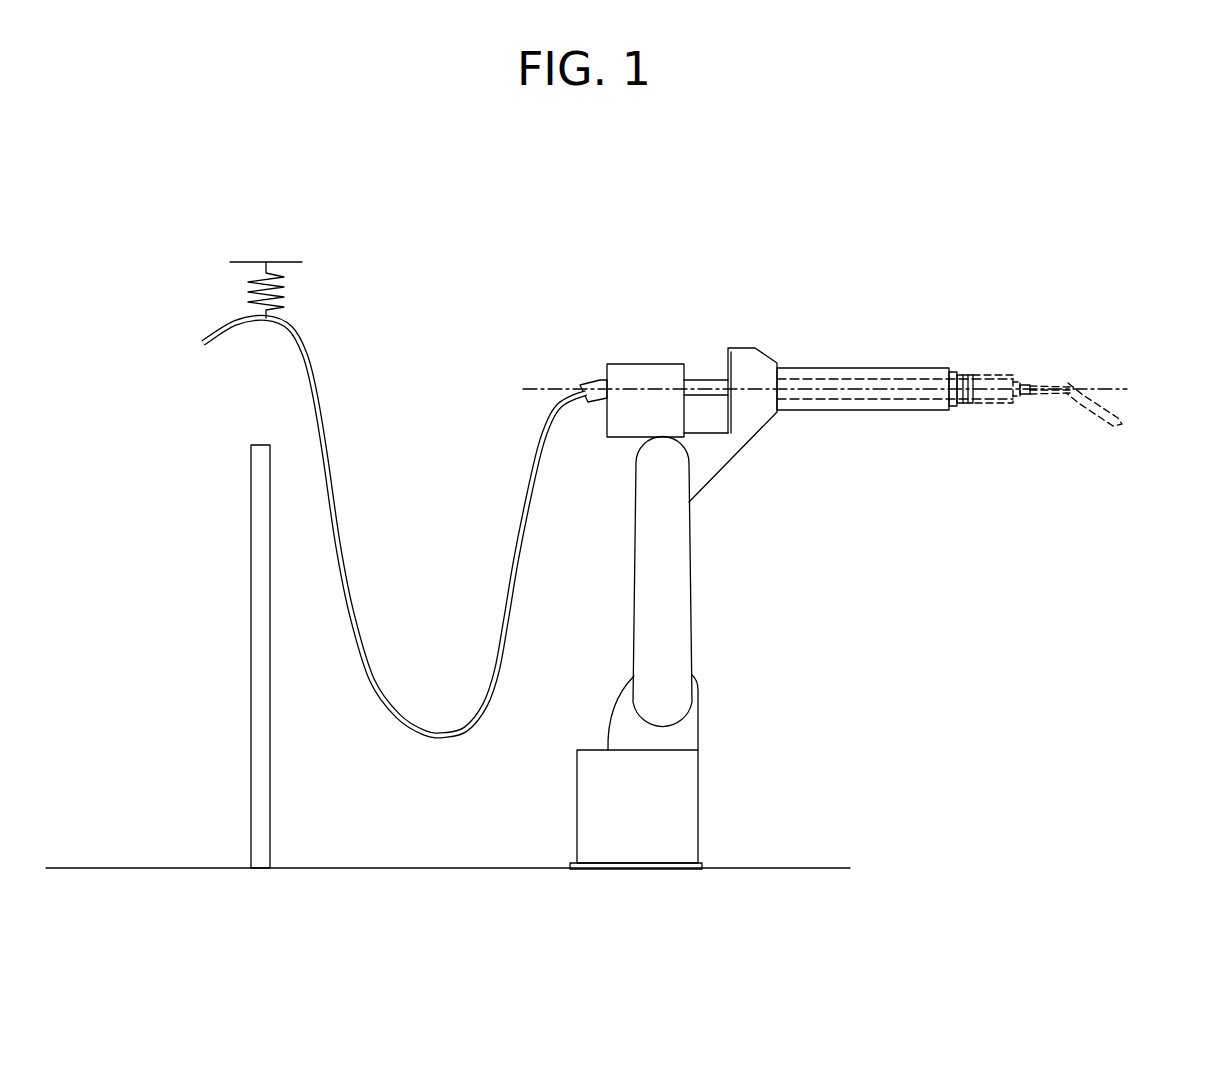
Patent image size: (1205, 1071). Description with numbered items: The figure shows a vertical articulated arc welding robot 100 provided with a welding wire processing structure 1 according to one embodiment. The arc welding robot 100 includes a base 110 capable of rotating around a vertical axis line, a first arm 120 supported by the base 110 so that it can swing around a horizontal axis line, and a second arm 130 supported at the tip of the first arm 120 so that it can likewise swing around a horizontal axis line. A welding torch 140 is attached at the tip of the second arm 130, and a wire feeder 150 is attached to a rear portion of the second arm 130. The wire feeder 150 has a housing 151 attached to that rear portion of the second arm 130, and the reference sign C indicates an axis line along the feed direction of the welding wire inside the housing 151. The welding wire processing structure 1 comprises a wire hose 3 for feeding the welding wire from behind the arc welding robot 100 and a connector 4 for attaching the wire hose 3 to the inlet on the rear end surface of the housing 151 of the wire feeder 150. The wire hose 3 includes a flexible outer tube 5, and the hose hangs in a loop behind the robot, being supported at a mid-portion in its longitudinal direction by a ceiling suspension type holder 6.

The welding wire processing structure 1 is at (405, 499).
The wire hose 3 is at (394, 527).
The connector 4 is at (582, 362).
The outer tube 5 is at (508, 590).
The ceiling suspension type holder 6 is at (306, 293).
The axis line C is at (533, 387).
The arc welding robot 100 is at (846, 505).
The base 110 is at (700, 722).
The first arm 120 is at (690, 580).
The second arm 130 is at (760, 350).
The welding torch 140 is at (1097, 412).
The wire feeder 150 is at (657, 345).
The housing 151 is at (661, 365).